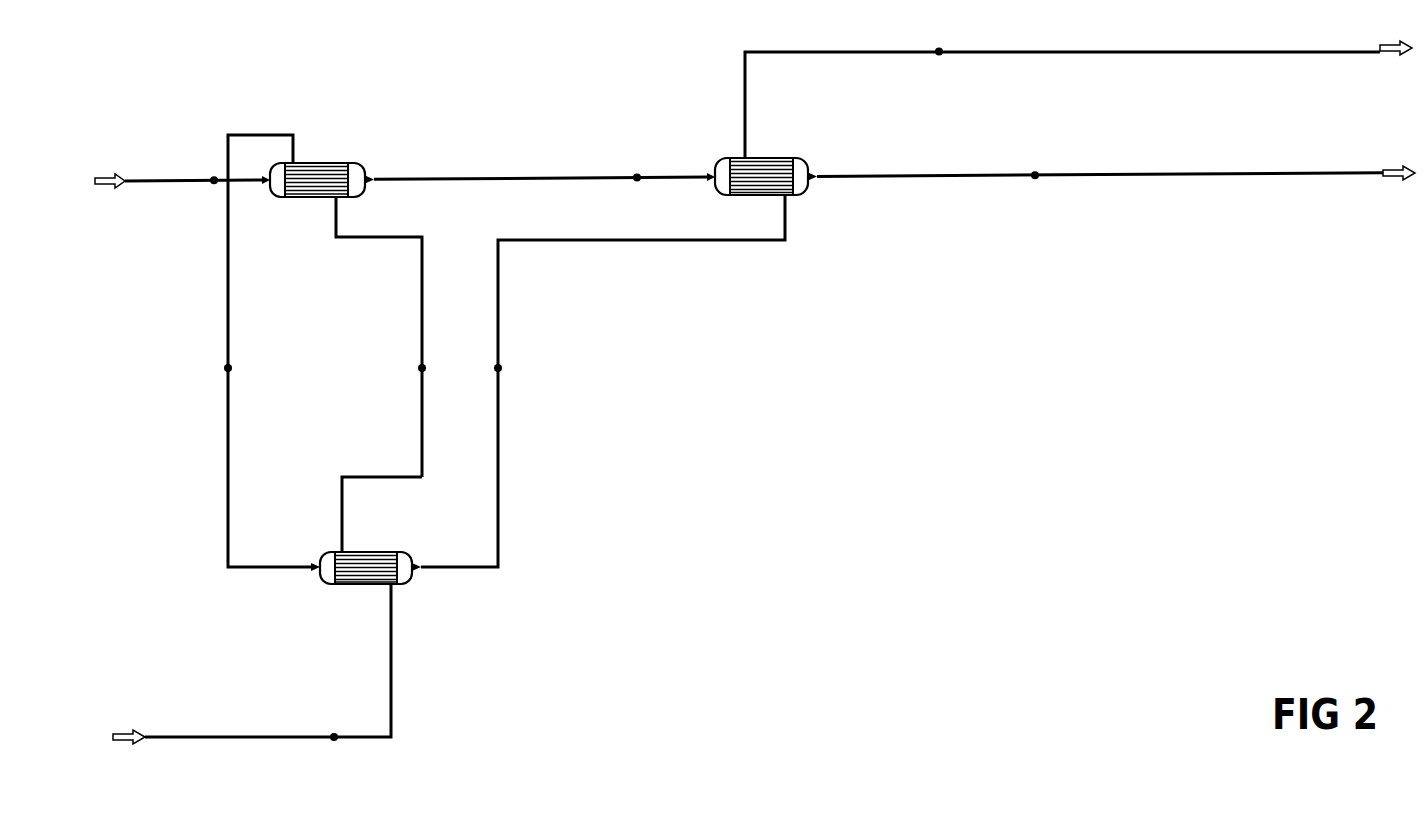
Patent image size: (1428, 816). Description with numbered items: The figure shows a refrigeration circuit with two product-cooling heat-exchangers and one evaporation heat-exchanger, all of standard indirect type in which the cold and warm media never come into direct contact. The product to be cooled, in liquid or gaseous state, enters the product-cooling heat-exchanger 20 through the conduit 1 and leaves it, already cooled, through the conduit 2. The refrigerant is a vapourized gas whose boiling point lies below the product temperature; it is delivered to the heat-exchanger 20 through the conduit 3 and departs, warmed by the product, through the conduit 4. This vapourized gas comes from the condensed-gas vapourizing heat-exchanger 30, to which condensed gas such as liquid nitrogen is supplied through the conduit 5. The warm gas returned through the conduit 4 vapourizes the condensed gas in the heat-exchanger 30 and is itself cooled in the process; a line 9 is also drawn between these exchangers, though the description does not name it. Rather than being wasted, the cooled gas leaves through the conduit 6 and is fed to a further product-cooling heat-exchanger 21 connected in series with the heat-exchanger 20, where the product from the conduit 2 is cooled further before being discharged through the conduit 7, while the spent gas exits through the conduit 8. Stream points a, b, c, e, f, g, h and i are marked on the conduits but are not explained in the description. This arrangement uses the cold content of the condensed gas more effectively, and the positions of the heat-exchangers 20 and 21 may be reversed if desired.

The conduit 1 is at (202, 181).
The conduit 2 is at (553, 178).
The conduit 3 is at (422, 299).
The conduit 4 is at (228, 299).
The conduit 5 is at (223, 737).
The conduit 6 is at (498, 512).
The conduit 7 is at (929, 176).
The conduit 8 is at (999, 51).
The line into third heat exchanger 9 is at (377, 477).
The product-cooling heat-exchanger 20 is at (353, 163).
The further product-cooling heat-exchanger 21 is at (785, 158).
The condensed-gas vapourizing heat-exchanger 30 is at (392, 552).
The stream point a is at (213, 164).
The stream point b is at (637, 162).
The stream point c is at (1036, 160).
The stream point e is at (335, 722).
The stream point f is at (414, 368).
The stream point g is at (219, 368).
The stream point h is at (489, 368).
The stream point i is at (940, 36).